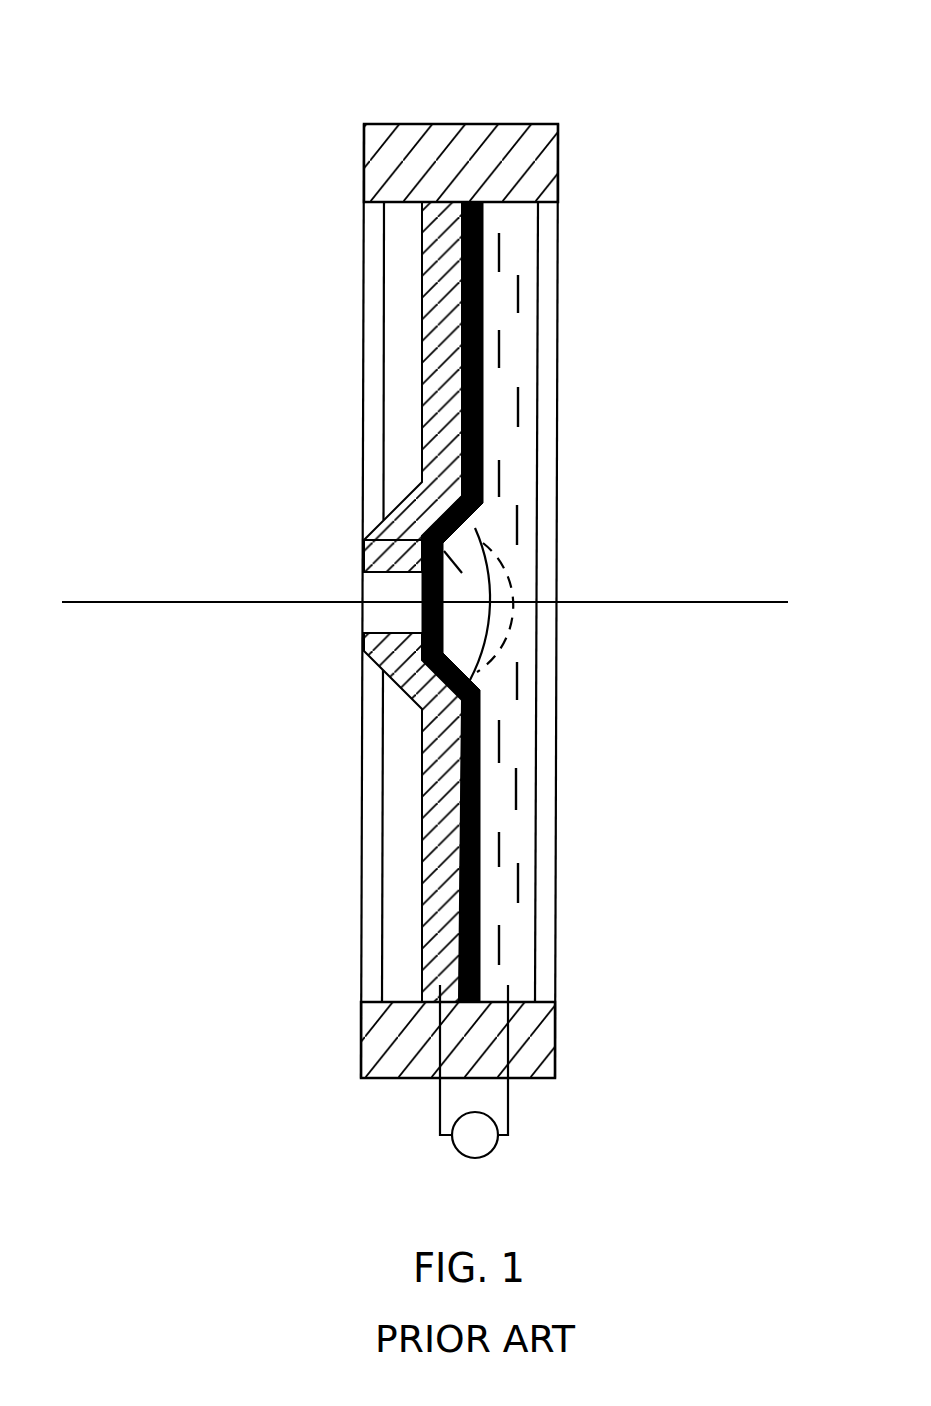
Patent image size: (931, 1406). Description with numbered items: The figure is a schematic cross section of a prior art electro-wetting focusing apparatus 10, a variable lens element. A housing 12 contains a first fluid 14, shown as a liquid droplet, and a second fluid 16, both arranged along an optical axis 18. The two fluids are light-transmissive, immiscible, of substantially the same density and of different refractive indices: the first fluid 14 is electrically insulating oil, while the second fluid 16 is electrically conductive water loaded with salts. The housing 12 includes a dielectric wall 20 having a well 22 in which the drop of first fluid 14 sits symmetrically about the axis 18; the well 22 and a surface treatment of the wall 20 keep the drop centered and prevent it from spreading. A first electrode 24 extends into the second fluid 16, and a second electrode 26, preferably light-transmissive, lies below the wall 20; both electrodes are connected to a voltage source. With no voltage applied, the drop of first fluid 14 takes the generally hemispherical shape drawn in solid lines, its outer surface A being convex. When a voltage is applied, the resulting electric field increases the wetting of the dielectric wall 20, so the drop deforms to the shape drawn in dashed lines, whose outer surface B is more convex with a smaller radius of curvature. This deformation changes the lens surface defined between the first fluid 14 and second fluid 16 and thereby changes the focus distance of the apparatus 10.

The electro-wetting focusing apparatus 10 is at (292, 74).
The housing 12 is at (483, 124).
The first fluid 14 is at (423, 545).
The second fluid 16 is at (517, 927).
The optical axis 18 is at (730, 602).
The dielectric wall 20 is at (481, 815).
The well 22 is at (452, 687).
The first electrode 24 is at (507, 993).
The second electrode 26 is at (420, 802).
The outer surface of drop with no voltage A is at (475, 530).
The outer surface of drop with voltage applied B is at (510, 582).